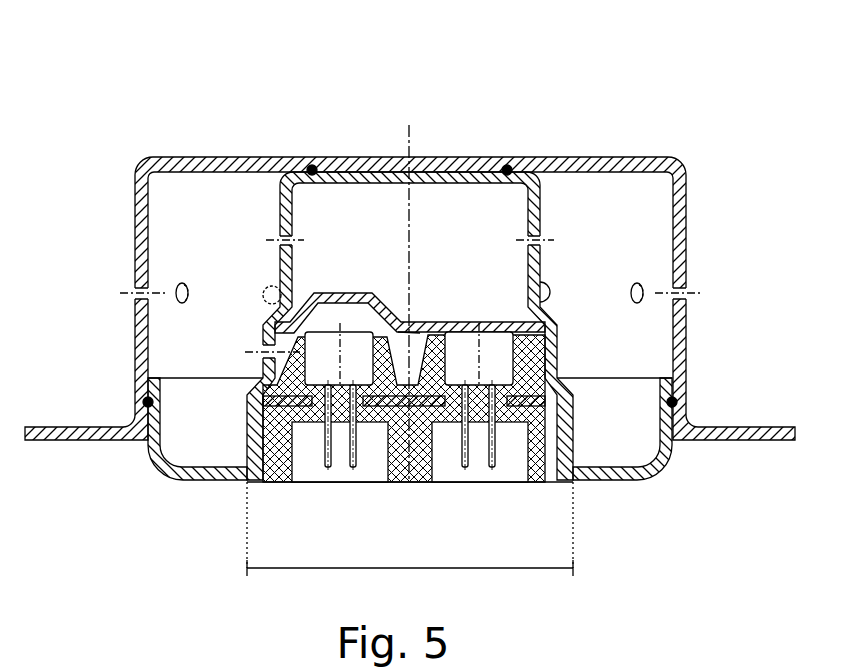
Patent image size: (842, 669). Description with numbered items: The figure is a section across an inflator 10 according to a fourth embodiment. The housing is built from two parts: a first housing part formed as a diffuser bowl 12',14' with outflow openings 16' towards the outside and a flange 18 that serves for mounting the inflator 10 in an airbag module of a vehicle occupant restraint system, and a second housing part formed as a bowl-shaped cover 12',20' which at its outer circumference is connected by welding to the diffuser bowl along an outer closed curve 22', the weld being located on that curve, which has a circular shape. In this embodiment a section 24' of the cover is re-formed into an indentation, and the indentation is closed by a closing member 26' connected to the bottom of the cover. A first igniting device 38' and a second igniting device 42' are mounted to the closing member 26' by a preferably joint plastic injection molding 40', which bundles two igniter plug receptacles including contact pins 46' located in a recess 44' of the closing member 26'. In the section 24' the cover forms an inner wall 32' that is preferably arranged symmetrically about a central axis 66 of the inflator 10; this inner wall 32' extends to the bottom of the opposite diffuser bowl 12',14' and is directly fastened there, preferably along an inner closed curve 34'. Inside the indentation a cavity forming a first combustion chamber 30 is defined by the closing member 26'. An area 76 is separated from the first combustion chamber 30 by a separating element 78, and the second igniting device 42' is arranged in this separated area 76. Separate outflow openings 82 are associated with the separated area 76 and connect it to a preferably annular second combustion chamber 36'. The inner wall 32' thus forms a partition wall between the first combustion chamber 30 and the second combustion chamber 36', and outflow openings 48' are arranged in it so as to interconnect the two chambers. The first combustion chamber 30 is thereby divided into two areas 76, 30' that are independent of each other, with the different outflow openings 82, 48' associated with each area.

The inflator 10 is at (707, 91).
The second housing part / diffuser bowl 12',14' is at (418, 295).
The housing part / bowl-shaped cover 12',20' is at (445, 453).
The outflow openings 16' is at (407, 290).
The flange 18 is at (778, 426).
The outer closed curve 22' is at (416, 383).
The section 24' is at (410, 556).
The closing member 26' is at (410, 468).
The first combustion chamber 30 is at (451, 161).
The area of first combustion chamber 30' is at (472, 203).
The inner wall 32' is at (395, 326).
The inner closed curve 34' is at (427, 135).
The second combustion chamber 36' is at (613, 206).
The first igniting device 38' is at (479, 334).
The plastic injection molding 40' is at (410, 484).
The second igniting device 42' is at (352, 317).
The recess 44' is at (404, 437).
The contact pins 46' is at (399, 459).
The outflow openings 48' is at (412, 240).
The central axis 66 is at (409, 128).
The separated area 76 is at (398, 331).
The separating element 78 is at (322, 293).
The separate outflow openings 82 is at (262, 351).